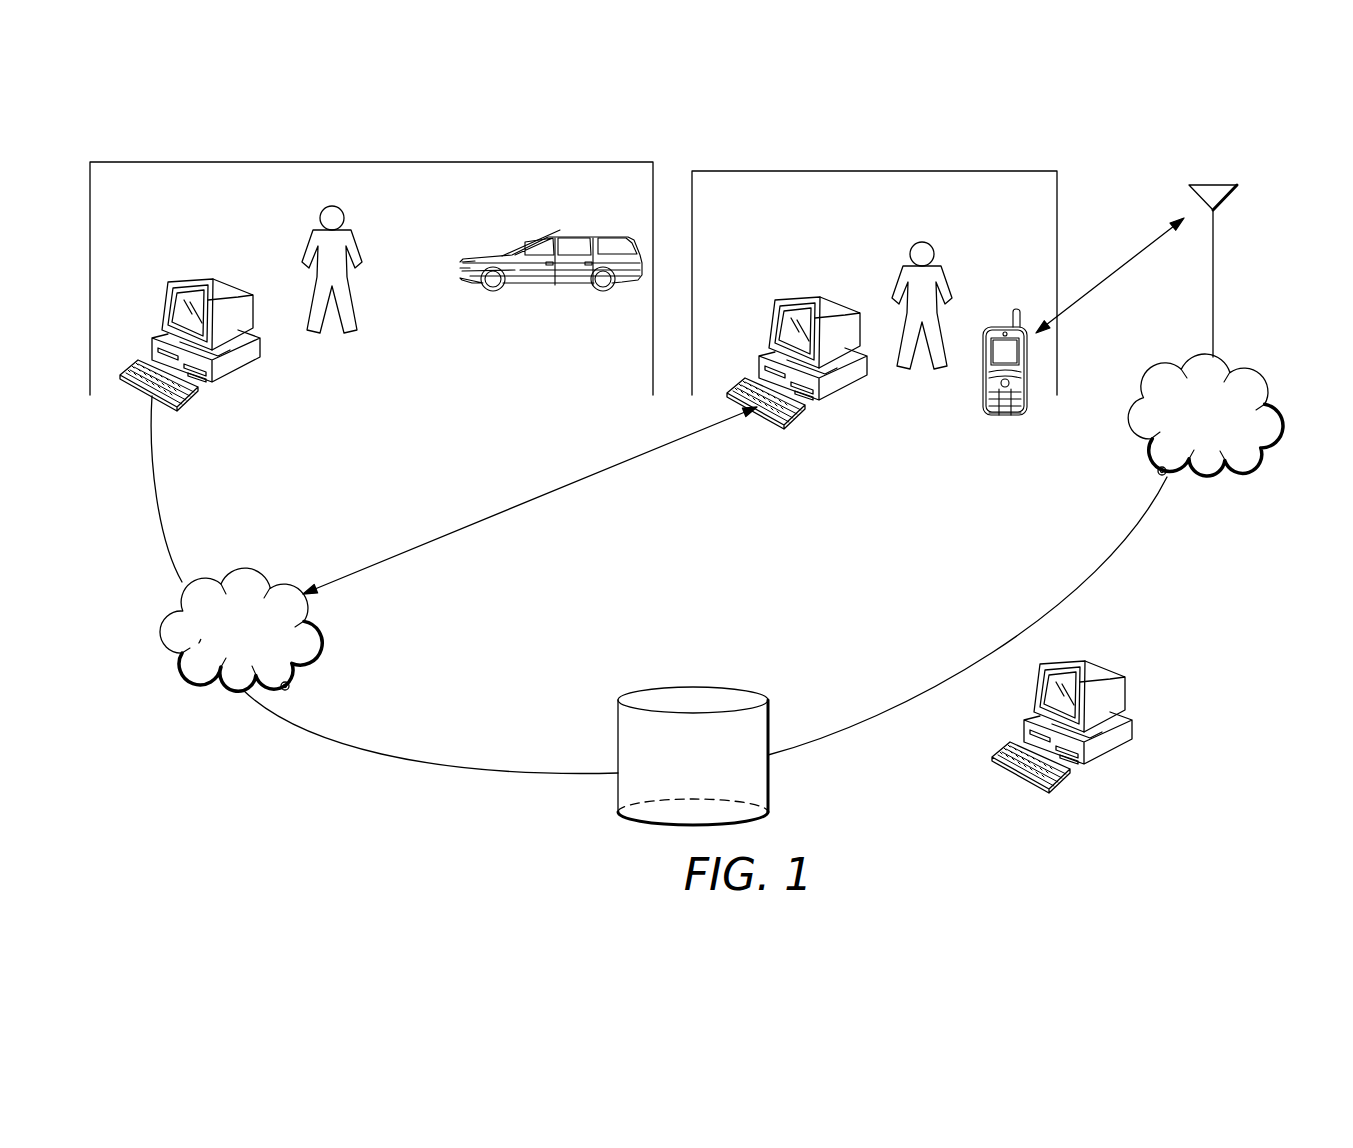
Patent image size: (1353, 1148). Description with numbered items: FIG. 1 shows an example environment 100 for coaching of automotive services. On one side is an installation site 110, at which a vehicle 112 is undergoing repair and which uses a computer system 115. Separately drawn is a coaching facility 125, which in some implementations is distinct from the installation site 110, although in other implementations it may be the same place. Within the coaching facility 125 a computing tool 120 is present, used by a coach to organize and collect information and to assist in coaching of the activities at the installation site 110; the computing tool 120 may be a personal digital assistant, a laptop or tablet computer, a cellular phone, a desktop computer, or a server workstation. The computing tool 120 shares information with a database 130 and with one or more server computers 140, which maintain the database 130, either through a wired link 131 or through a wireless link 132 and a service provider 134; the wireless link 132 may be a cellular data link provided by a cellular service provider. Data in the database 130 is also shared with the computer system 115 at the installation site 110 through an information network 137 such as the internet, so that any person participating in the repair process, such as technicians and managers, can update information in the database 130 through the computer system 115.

The system 100 is at (1261, 113).
The installation site 110 is at (610, 163).
The vehicle 112 is at (597, 232).
The computer system 115 is at (184, 282).
The computing tool 120 is at (755, 442).
The coaching facility 125 is at (1030, 173).
The database 130 is at (748, 692).
The wired link 131 is at (530, 500).
The wireless link 132 is at (1108, 280).
The service provider 134 is at (1258, 362).
The information network 137 is at (280, 577).
The server computers 140 is at (1108, 752).